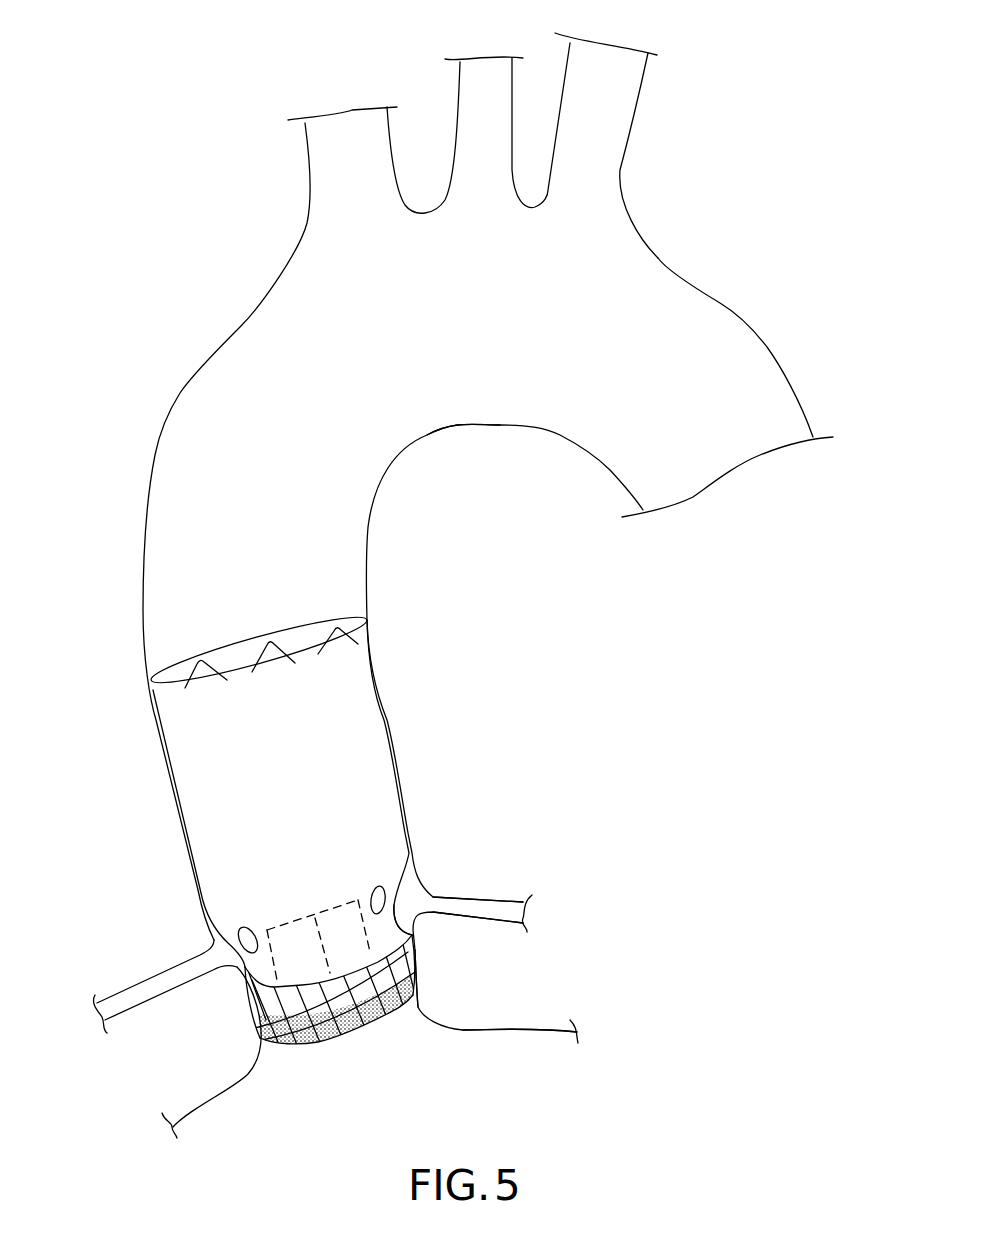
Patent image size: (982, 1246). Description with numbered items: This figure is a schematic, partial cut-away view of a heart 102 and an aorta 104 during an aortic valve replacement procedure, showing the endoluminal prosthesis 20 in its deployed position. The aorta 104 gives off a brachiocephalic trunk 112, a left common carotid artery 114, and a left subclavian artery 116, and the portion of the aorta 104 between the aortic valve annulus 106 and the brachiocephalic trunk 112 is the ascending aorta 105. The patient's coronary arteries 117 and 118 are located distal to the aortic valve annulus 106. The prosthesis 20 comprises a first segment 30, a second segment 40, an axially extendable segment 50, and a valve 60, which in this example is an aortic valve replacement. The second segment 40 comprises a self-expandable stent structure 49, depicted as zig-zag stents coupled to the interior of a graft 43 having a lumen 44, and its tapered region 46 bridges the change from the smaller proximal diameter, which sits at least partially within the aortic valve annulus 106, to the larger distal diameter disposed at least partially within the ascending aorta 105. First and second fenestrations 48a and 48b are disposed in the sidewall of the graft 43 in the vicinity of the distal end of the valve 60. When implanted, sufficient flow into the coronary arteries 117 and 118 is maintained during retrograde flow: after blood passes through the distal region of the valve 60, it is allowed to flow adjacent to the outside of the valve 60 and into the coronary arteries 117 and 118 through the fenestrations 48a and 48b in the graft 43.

The aorta 104 is at (183, 393).
The brachiocephalic trunk 112 is at (338, 185).
The left common carotid artery 114 is at (480, 90).
The left subclavian artery 116 is at (598, 102).
The ascending aorta 105 is at (317, 538).
The first coronary artery 117 is at (135, 995).
The second coronary artery 118 is at (502, 908).
The aortic valve annulus 106 is at (397, 960).
The heart 102 is at (513, 1023).
The endoluminal prosthesis 20 is at (287, 772).
The second segment 40 is at (287, 772).
The graft 43 is at (343, 678).
The lumen 44 is at (305, 637).
The stent structure 49 is at (187, 670).
The tapered region 46 is at (397, 880).
The first fenestration 48a is at (240, 933).
The second fenestration 48b is at (378, 886).
The valve 60 is at (287, 921).
The first segment 30 is at (318, 990).
The axially extendable segment 50 is at (410, 1000).